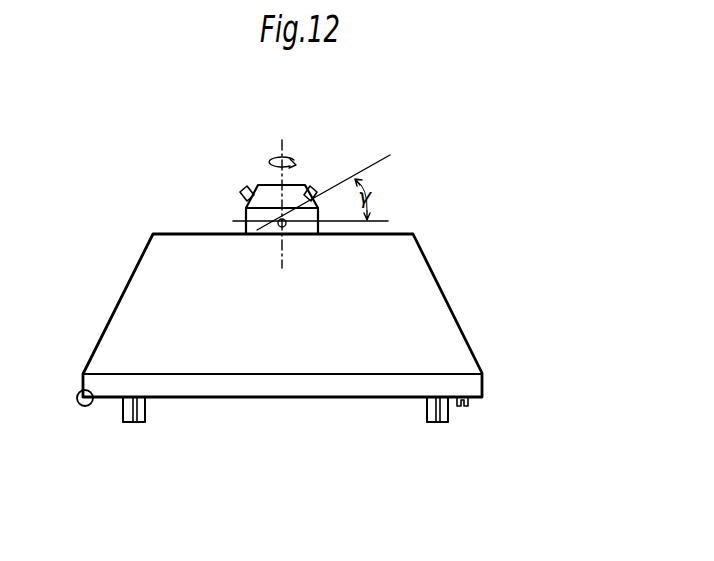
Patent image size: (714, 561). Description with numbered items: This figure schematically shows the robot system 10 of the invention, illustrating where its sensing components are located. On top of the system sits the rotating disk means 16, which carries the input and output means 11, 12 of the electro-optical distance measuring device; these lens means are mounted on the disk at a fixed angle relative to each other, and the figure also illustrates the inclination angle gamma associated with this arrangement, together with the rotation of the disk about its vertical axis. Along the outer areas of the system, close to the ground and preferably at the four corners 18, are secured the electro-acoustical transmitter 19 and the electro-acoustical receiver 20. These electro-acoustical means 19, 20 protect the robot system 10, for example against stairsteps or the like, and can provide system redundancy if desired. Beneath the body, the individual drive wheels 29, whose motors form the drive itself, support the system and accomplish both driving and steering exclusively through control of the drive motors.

The robot system 10 is at (458, 317).
The input-output means 11 is at (260, 170).
The input-output means 12 is at (243, 190).
The rotating disk means 16 is at (246, 208).
The corners 18 is at (78, 405).
The electro-acoustical transmitter 19 is at (467, 404).
The electro-acoustical receiver 20 is at (460, 400).
The drive wheel 29 is at (146, 423).